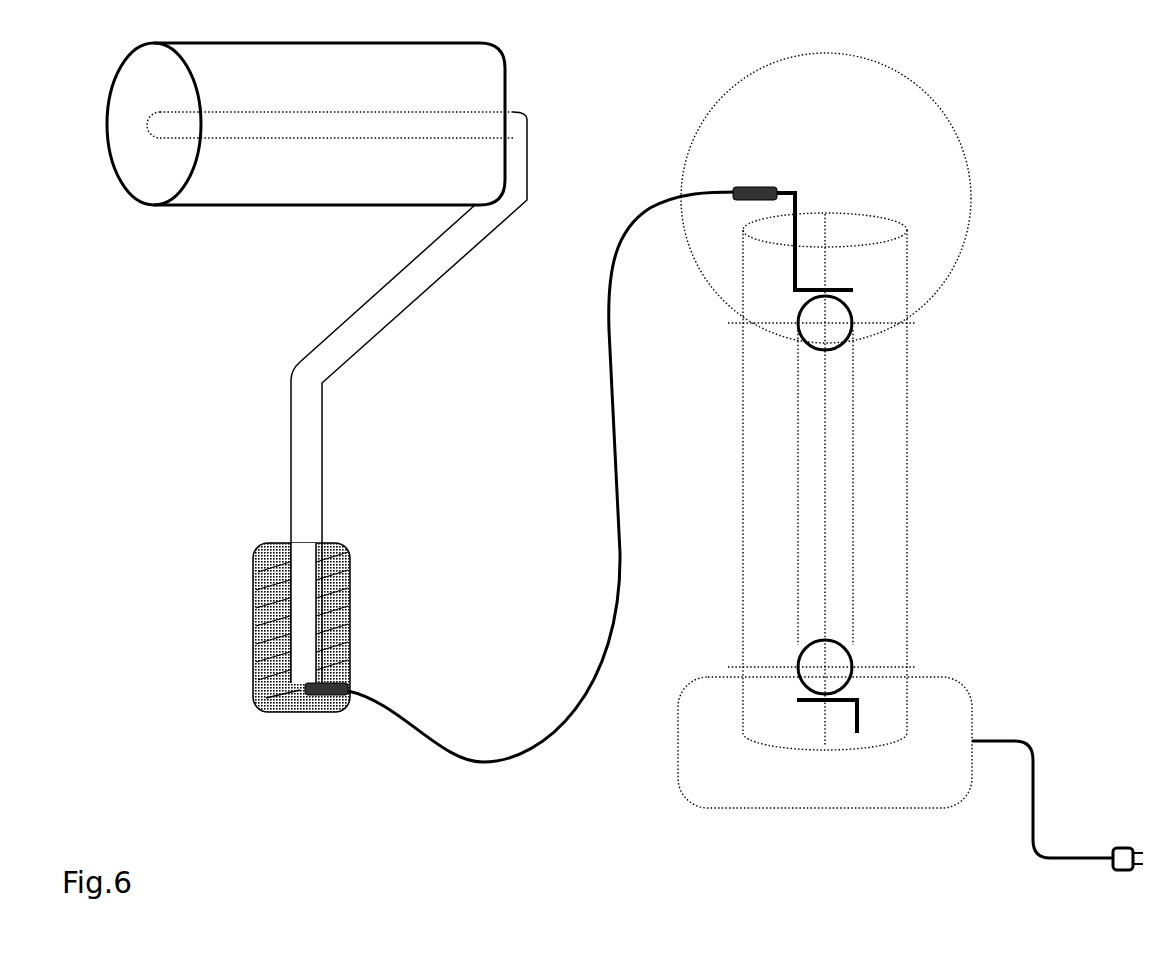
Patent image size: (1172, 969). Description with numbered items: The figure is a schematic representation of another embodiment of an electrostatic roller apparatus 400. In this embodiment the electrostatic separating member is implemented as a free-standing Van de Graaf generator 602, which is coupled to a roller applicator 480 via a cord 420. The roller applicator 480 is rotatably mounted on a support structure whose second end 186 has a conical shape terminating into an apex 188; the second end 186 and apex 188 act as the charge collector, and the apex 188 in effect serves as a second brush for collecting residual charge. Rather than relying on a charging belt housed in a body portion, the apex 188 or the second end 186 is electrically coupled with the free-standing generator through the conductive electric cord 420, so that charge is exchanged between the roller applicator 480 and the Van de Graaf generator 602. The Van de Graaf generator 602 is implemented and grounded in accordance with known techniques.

The electrostatic roller apparatus 400 is at (380, 752).
The roller applicator 480 is at (228, 192).
The second end 186 is at (352, 610).
The apex 188 is at (318, 717).
The cord 420 is at (520, 753).
The Van de Graaf generator 602 is at (989, 499).